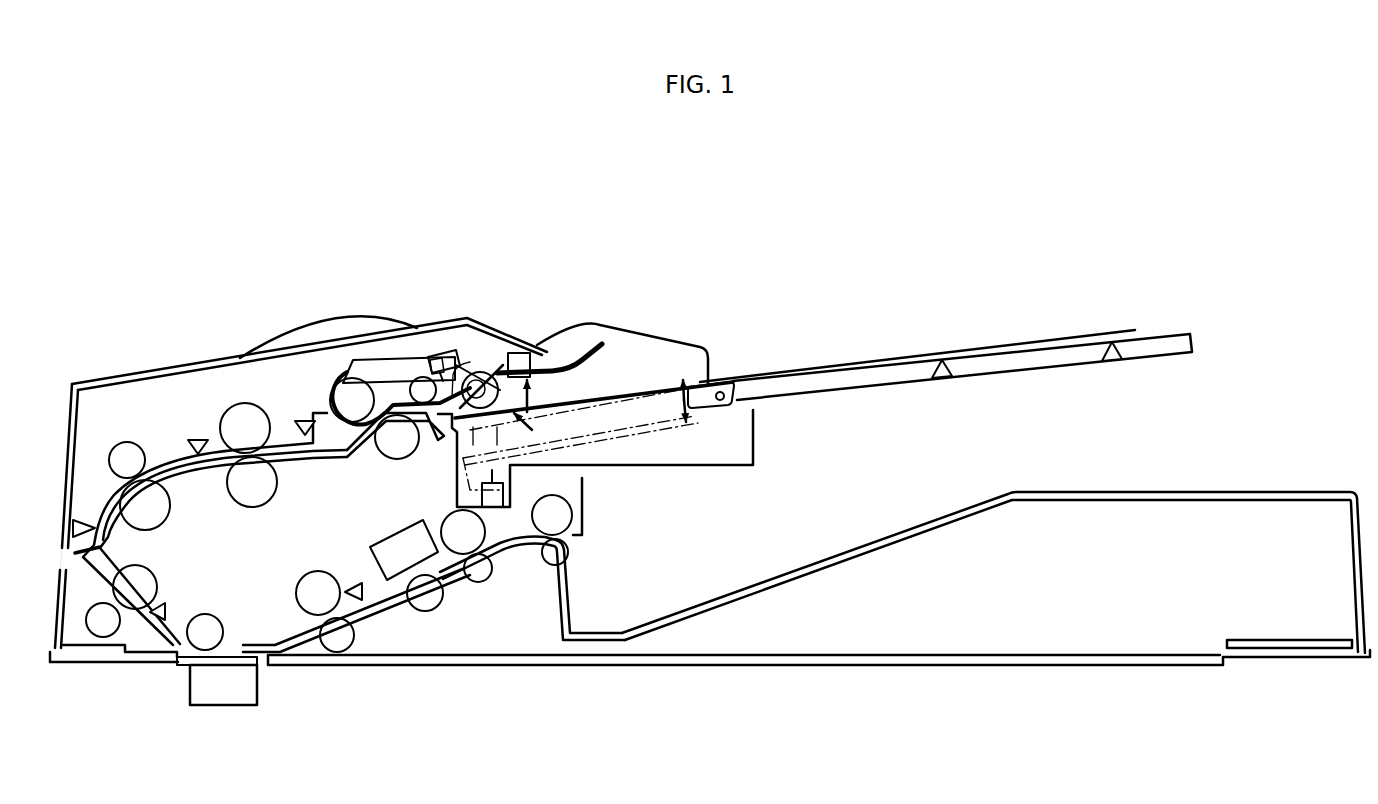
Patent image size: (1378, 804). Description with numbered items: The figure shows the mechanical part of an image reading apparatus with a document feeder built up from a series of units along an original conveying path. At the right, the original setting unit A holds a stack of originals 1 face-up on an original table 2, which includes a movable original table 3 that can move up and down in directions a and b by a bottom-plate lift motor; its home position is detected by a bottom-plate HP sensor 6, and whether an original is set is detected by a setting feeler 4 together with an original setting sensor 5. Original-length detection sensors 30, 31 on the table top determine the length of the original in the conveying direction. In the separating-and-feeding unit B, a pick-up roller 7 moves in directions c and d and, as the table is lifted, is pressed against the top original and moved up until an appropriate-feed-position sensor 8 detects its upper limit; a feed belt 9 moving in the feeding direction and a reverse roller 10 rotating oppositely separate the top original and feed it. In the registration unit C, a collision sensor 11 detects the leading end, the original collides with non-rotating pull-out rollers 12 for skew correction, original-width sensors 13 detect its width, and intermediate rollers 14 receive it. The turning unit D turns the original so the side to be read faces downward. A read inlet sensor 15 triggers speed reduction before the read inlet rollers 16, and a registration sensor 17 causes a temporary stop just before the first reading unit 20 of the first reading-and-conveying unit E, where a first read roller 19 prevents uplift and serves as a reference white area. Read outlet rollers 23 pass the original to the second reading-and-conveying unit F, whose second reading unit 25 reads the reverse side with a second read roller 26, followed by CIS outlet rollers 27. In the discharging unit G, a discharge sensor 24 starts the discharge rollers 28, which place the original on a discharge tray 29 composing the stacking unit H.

The stack of originals 1 is at (1062, 343).
The original table 2 is at (1193, 341).
The movable original table 3 is at (608, 403).
The setting feeler 4 is at (524, 352).
The original setting sensor 5 is at (455, 445).
The bottom-plate HP sensor 6 is at (494, 500).
The pick-up roller 7 is at (477, 368).
The appropriate-feed-position sensor 8 is at (437, 354).
The feed belt 9 is at (393, 378).
The reverse roller 10 is at (383, 448).
The collision sensor 11 is at (304, 420).
The pull-out rollers 12 is at (243, 507).
The original-width sensors 13 is at (198, 439).
The intermediate rollers 14 is at (124, 441).
The read inlet sensor 15 is at (85, 515).
The read inlet rollers 16 is at (82, 634).
The registration sensor 17 is at (162, 608).
The first read roller 19 is at (215, 614).
The first reading unit 20 is at (230, 707).
The read outlet rollers 23 is at (305, 573).
The discharge sensor 24 is at (354, 582).
The second reading unit 25 is at (413, 530).
The second read roller 26 is at (445, 613).
The CIS outlet rollers 27 is at (483, 590).
The discharge rollers 28 is at (558, 566).
The discharge tray 29 is at (854, 556).
The original-length detection sensor 30 is at (942, 379).
The original-length detection sensor 31 is at (1112, 361).
The original setting unit A is at (793, 353).
The separating-and-feeding unit B is at (481, 306).
The registration unit C is at (257, 388).
The turning unit D is at (92, 432).
The first reading-and-conveying unit E is at (208, 722).
The second reading-and-conveying unit F is at (375, 533).
The discharging unit G is at (593, 502).
The stacking unit H is at (835, 538).
The upward direction of movable original table a is at (688, 376).
The downward direction of movable original table b is at (692, 428).
The upward direction of pick-up roller c is at (540, 394).
The direction of pick-up roller d is at (534, 425).